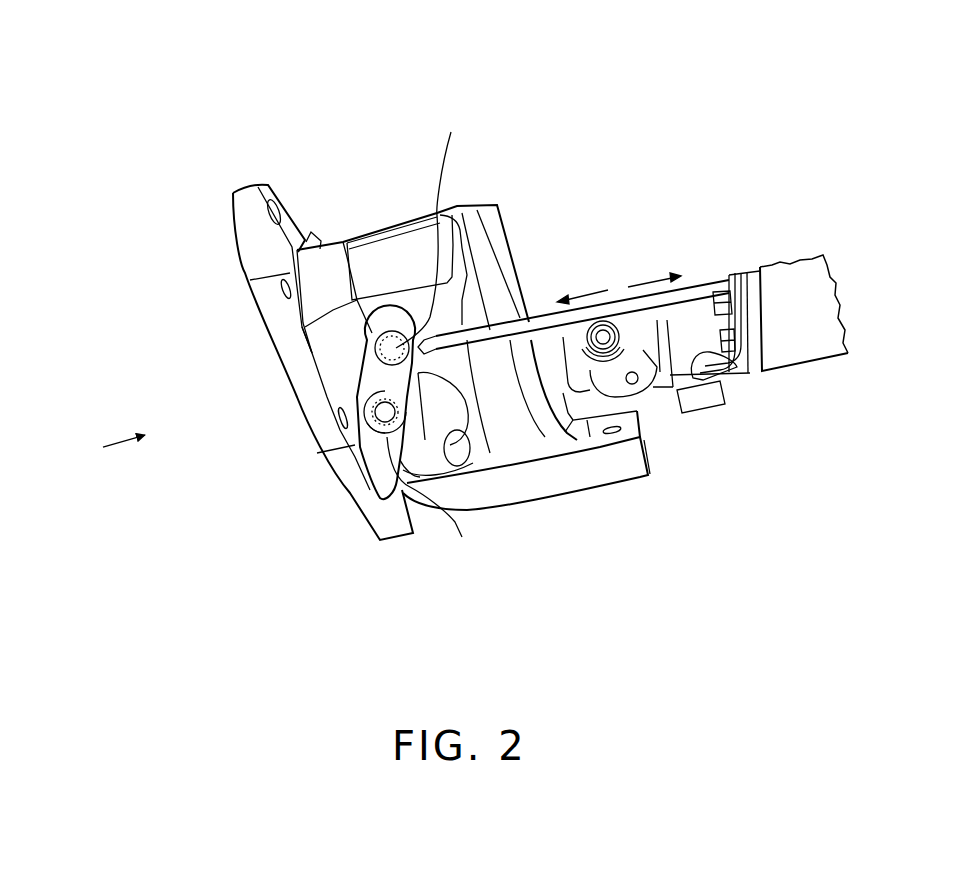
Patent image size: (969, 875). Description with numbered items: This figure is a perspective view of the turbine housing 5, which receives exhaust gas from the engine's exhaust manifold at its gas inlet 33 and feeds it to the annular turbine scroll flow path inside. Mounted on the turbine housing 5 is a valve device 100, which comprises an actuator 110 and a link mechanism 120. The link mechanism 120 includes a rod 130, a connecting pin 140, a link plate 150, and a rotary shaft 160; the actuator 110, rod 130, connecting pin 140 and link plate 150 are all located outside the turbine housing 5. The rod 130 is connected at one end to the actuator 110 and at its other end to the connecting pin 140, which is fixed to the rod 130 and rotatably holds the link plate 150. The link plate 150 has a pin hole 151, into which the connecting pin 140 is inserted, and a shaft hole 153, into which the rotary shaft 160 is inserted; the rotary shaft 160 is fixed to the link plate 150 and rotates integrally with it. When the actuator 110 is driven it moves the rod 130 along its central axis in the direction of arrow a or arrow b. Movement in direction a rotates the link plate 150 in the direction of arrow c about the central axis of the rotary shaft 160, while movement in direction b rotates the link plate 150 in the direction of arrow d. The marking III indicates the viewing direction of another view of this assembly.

The turbine housing 5 is at (300, 72).
The valve device 100 is at (392, 153).
The link mechanism 120 is at (778, 126).
The rod 130 is at (695, 283).
The actuator 110 is at (795, 272).
The connecting pin 140 is at (395, 373).
The link plate 150 is at (373, 480).
The pin hole 151 is at (387, 350).
The shaft hole 153 is at (360, 426).
The rotary shaft 160 is at (362, 389).
The gas inlet 33 is at (583, 492).
The arrow a is at (590, 297).
The arrow b is at (645, 285).
The arrow c is at (428, 227).
The arrow d is at (427, 500).
The view direction III is at (102, 451).